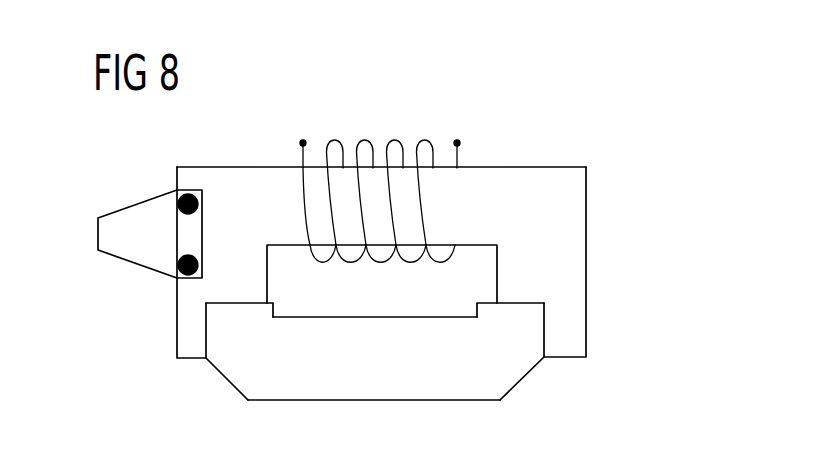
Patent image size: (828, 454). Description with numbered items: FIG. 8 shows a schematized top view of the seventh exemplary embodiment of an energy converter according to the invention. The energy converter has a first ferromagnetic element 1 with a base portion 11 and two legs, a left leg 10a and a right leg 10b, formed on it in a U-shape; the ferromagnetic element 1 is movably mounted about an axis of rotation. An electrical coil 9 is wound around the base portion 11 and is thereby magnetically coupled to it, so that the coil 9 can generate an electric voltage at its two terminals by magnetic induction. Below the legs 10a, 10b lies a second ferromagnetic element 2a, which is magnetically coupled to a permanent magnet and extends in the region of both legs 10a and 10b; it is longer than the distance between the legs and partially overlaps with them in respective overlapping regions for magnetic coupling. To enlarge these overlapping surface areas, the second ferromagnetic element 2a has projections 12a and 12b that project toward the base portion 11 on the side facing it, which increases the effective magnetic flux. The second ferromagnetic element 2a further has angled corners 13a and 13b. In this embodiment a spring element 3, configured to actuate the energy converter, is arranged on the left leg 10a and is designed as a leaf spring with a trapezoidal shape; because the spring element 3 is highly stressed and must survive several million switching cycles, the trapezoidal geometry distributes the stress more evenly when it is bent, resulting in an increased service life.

The ferromagnetic element 1 is at (141, 139).
The second ferromagnetic element 2a is at (377, 389).
The spring element 3 is at (125, 222).
The electrical coil 9 is at (303, 179).
The left leg 10a is at (186, 312).
The right leg 10b is at (580, 311).
The base portion 11 is at (580, 184).
The projection 12a is at (228, 320).
The projection 12b is at (514, 317).
The angled corner 13a is at (227, 384).
The angled corner 13b is at (524, 384).